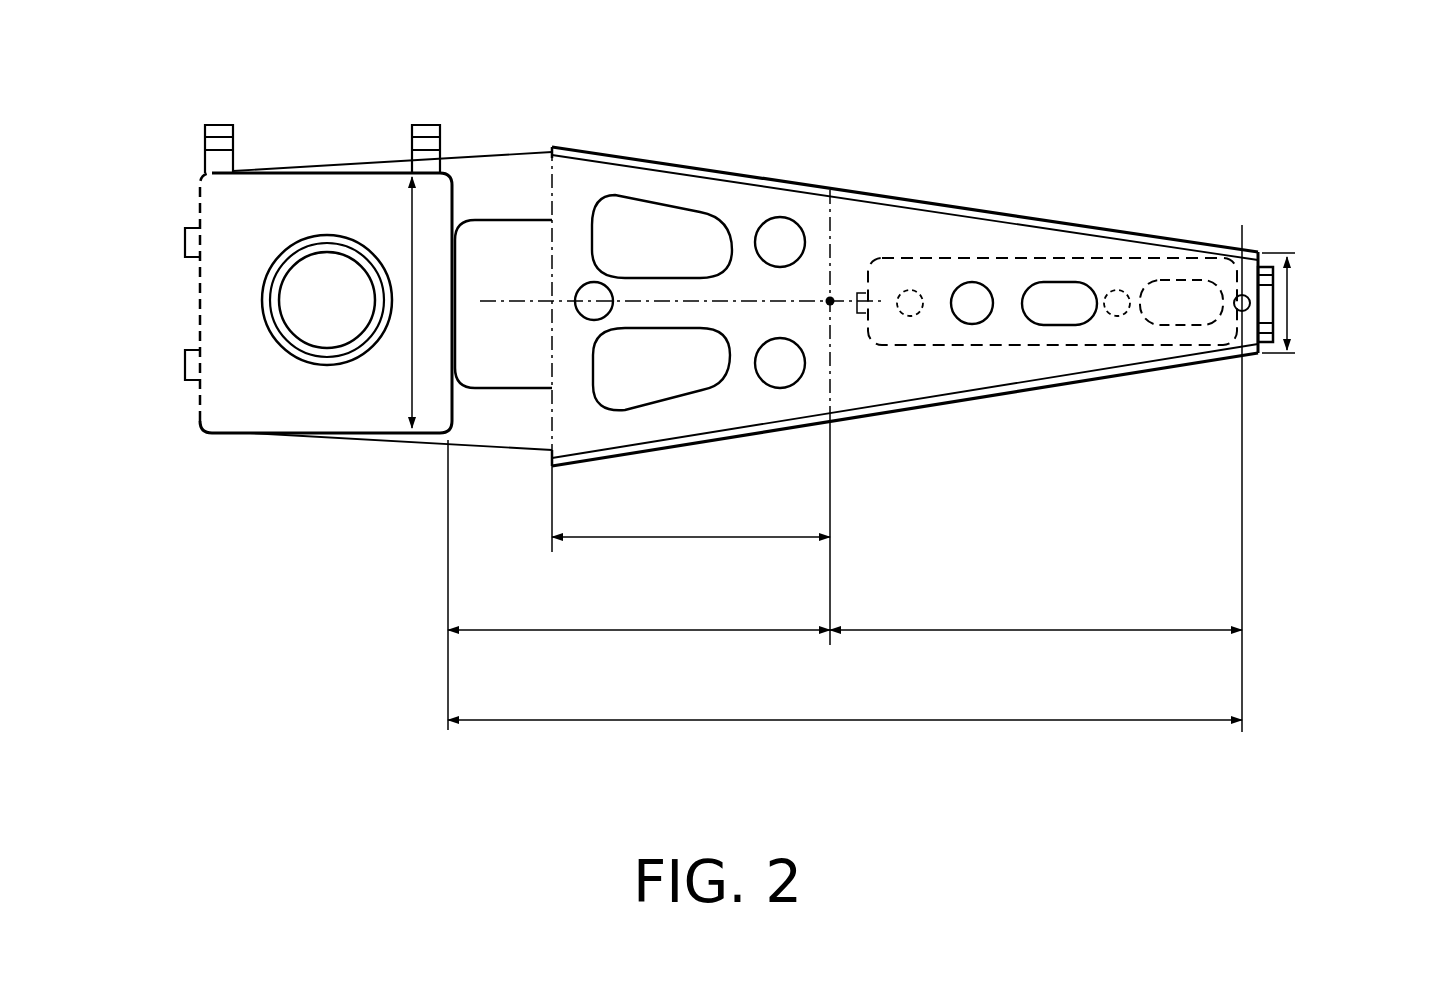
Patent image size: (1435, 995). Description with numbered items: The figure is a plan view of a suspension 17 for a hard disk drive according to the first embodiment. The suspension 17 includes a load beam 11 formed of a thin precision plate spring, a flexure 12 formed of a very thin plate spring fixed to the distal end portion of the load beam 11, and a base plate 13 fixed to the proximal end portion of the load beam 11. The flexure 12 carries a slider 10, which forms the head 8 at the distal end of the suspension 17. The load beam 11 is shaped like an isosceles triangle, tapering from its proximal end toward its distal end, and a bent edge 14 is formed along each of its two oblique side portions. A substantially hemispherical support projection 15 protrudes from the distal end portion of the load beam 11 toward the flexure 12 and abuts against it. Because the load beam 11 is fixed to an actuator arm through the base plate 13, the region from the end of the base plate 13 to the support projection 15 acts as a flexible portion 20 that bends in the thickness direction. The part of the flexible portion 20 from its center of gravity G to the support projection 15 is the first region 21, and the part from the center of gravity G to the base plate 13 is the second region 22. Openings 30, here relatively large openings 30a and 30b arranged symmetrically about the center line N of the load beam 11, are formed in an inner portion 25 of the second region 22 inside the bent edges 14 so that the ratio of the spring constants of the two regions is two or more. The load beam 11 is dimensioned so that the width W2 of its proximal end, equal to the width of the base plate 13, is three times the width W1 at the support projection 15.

The head 8 is at (1270, 345).
The slider 10 is at (1216, 283).
The load beam 11 is at (925, 378).
The flexure 12 is at (1077, 258).
The base plate 13 is at (457, 186).
The bent edge 14 is at (985, 216).
The support projection 15 is at (1240, 311).
The suspension 17 is at (603, 135).
The flexible portion 20 is at (845, 742).
The first region 21 is at (1036, 667).
The second region 22 is at (639, 668).
The inner portion 25 is at (691, 575).
The openings 30 is at (736, 288).
The opening 30a is at (680, 200).
The opening 30b is at (805, 225).
The center line N is at (609, 288).
The center of gravity G is at (832, 298).
The width at support projection W1 is at (1290, 306).
The width of proximal end portion W2 is at (410, 233).